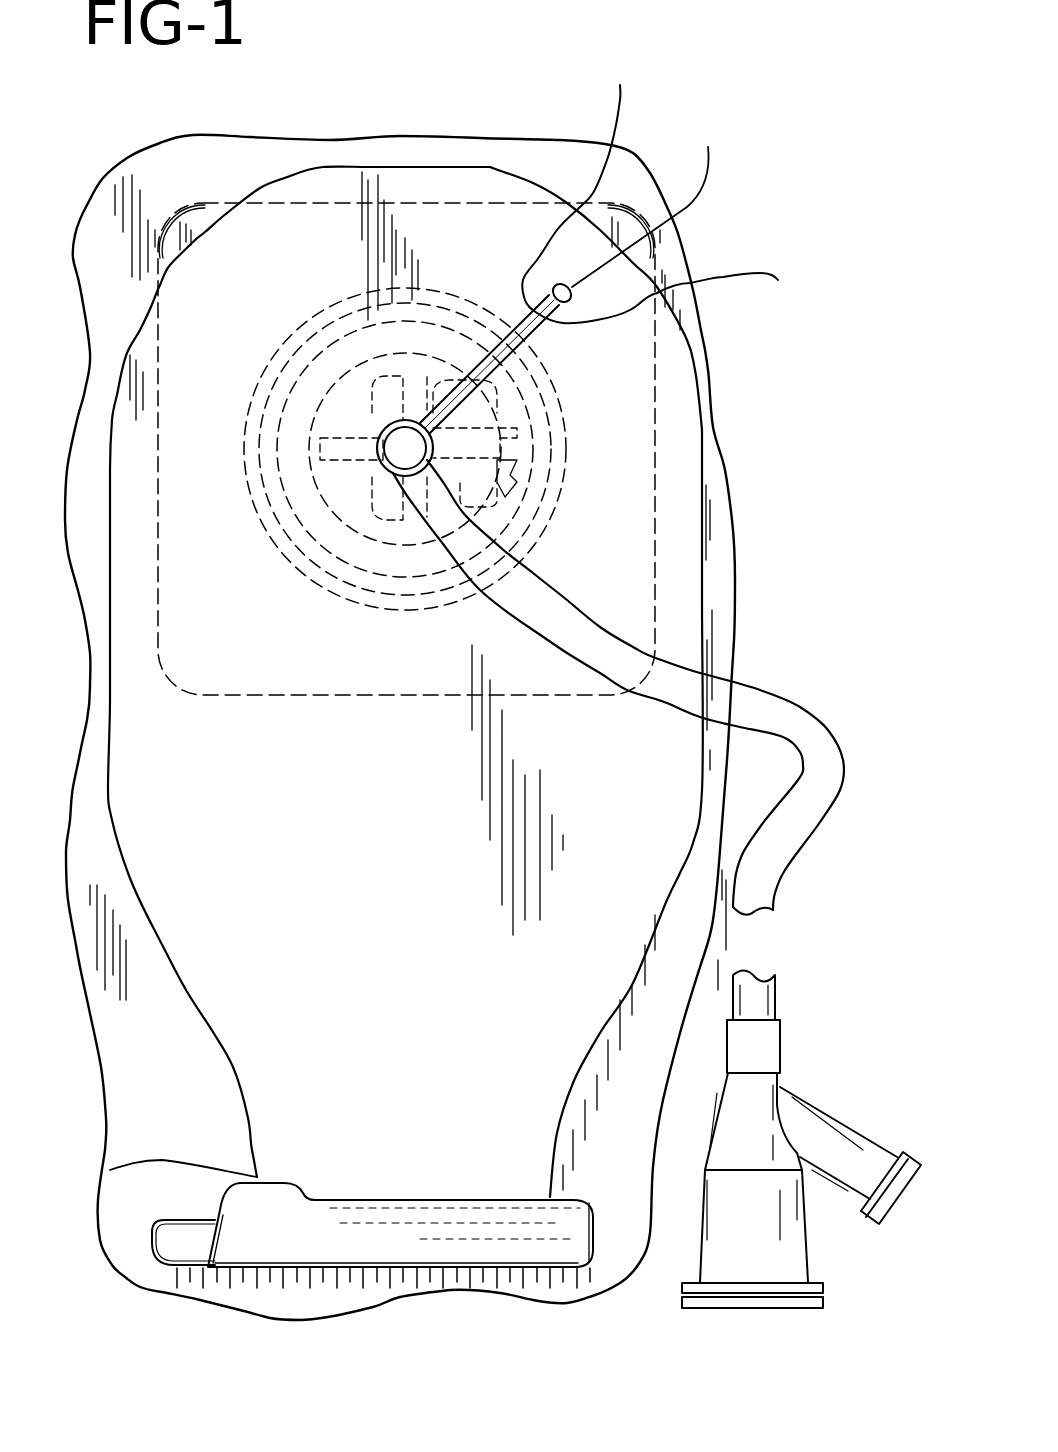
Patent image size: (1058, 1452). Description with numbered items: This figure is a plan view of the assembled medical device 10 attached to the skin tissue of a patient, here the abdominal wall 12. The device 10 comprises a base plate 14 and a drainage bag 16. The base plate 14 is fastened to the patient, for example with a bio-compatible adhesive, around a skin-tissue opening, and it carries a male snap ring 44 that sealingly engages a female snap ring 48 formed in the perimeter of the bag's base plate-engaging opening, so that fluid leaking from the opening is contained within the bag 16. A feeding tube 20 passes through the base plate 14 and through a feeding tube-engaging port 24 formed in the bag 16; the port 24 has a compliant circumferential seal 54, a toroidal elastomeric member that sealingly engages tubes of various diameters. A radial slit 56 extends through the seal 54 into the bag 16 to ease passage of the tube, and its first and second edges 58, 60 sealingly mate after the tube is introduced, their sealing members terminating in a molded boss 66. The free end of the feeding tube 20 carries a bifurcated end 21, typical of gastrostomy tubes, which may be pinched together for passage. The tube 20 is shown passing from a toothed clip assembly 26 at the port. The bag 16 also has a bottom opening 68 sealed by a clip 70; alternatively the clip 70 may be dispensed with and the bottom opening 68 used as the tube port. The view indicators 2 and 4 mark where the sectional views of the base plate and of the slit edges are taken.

The medical device 10 is at (198, 1029).
The abdominal wall 12 is at (718, 950).
The base plate 14 is at (662, 255).
The drainage bag 16 is at (717, 540).
The feeding tube 20 is at (805, 707).
The bifurcated end 21 is at (815, 1100).
The feeding tube-engaging port 24 is at (390, 453).
The toothed clip assembly 26 is at (356, 447).
The male snap ring 44 is at (337, 317).
The female snap ring 48 is at (380, 287).
The compliant circumferential seal 54 is at (390, 470).
The radial slit 56 is at (726, 286).
The first edge 58 is at (581, 189).
The second edge 60 is at (640, 323).
The molded boss 66 is at (649, 202).
The bottom opening 68 is at (110, 1170).
The clip 70 is at (238, 1245).
The section line 2- 2 is at (432, 28).
The section line 4- 4 is at (612, 395).